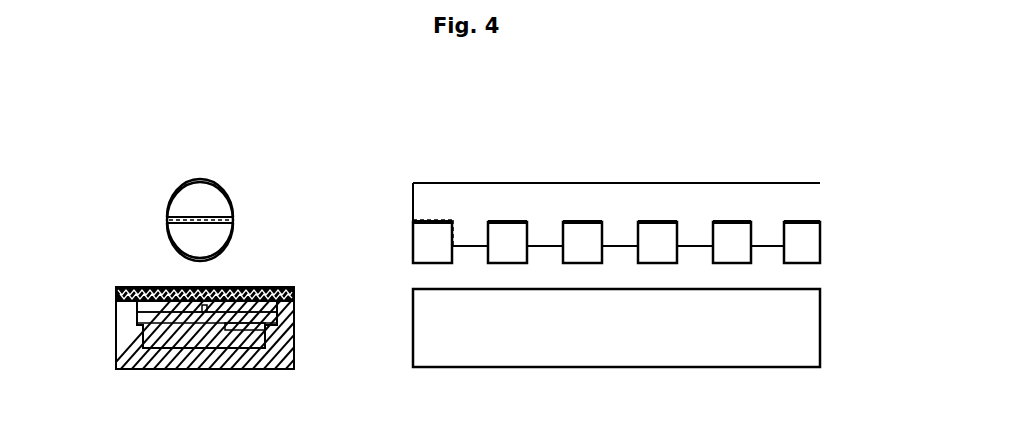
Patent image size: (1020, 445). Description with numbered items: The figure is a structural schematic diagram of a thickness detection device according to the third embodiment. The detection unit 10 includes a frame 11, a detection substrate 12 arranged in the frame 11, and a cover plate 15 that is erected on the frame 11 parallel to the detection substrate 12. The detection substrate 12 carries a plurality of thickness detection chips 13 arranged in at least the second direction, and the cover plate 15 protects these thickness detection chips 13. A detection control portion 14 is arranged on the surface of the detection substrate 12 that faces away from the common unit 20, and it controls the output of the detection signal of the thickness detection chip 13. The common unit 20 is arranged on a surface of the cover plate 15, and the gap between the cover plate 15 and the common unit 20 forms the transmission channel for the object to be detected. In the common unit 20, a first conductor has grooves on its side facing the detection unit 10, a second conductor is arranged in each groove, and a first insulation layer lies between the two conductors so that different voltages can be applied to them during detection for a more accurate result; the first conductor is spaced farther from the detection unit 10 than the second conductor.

The detection unit 10 is at (373, 373).
The frame 11 is at (122, 340).
The detection substrate 12 is at (262, 318).
The thickness detection chip 13 is at (207, 305).
The detection control portion 14 is at (267, 328).
The cover plate 15 is at (122, 292).
The common unit 20 is at (237, 225).